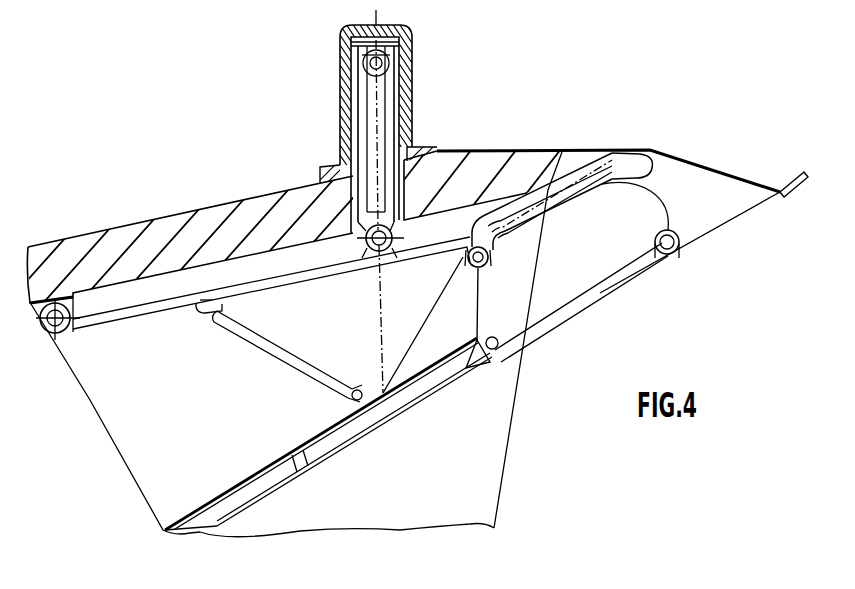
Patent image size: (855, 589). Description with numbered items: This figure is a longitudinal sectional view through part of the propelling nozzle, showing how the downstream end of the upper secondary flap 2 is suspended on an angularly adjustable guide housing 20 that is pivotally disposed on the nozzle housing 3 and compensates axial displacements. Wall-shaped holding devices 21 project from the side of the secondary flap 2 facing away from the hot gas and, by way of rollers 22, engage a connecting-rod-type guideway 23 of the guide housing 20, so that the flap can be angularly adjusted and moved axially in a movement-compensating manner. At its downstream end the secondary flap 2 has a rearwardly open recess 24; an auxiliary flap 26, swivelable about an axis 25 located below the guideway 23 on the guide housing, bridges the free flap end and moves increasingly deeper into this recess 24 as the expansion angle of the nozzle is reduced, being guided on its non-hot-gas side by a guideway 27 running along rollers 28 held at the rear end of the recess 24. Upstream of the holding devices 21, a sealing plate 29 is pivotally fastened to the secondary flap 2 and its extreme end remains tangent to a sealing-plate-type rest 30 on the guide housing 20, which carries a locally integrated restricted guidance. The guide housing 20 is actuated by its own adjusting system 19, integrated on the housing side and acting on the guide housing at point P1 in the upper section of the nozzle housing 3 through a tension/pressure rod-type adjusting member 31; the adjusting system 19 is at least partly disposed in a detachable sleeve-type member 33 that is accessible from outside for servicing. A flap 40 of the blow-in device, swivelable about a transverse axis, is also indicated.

The upper secondary flap 2 is at (283, 492).
The nozzle housing 3 is at (199, 210).
The adjusting system 19 is at (398, 118).
The guide housing 20 is at (726, 186).
The wall-shaped holding devices 21 is at (472, 323).
The rollers 22 is at (489, 264).
The connecting-rod-type guideway 23 is at (636, 153).
The recess 24 is at (342, 441).
The axis 25 is at (676, 252).
The auxiliary flap 26 is at (606, 290).
The guideway 27 is at (542, 310).
The rollers 28 is at (494, 352).
The sealing plate 29 is at (318, 362).
The sealing-plate-type rest 30 is at (329, 278).
The tension/pressure rod-type adjusting member 31 is at (368, 109).
The sleeve-type member 33 is at (413, 50).
The flaps 40 is at (792, 201).
The point P1 is at (370, 232).